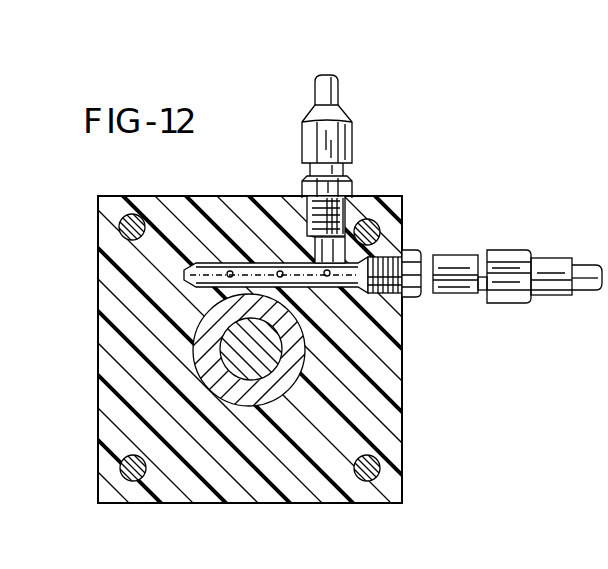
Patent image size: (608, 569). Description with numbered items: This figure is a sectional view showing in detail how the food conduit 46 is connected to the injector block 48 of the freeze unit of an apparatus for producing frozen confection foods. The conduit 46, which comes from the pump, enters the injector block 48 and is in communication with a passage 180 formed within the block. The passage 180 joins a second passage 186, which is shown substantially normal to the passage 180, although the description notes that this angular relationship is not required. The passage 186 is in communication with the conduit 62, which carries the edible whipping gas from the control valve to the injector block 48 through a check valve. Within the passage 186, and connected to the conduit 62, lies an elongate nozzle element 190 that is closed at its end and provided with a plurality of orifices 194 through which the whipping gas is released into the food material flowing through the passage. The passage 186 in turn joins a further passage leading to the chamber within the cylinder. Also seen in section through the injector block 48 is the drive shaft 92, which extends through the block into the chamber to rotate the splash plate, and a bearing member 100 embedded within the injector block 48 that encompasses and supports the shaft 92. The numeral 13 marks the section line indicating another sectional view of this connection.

The section line 13- 13 is at (168, 273).
The conduit 46 is at (338, 94).
The injector block 48 is at (402, 432).
The conduit 62 is at (420, 262).
The drive shaft 92 is at (205, 368).
The bearing member 100 is at (292, 356).
The passage 180 is at (348, 228).
The passage 186 is at (213, 263).
The elongate nozzle element 190 is at (305, 262).
The orifices 194 is at (212, 288).